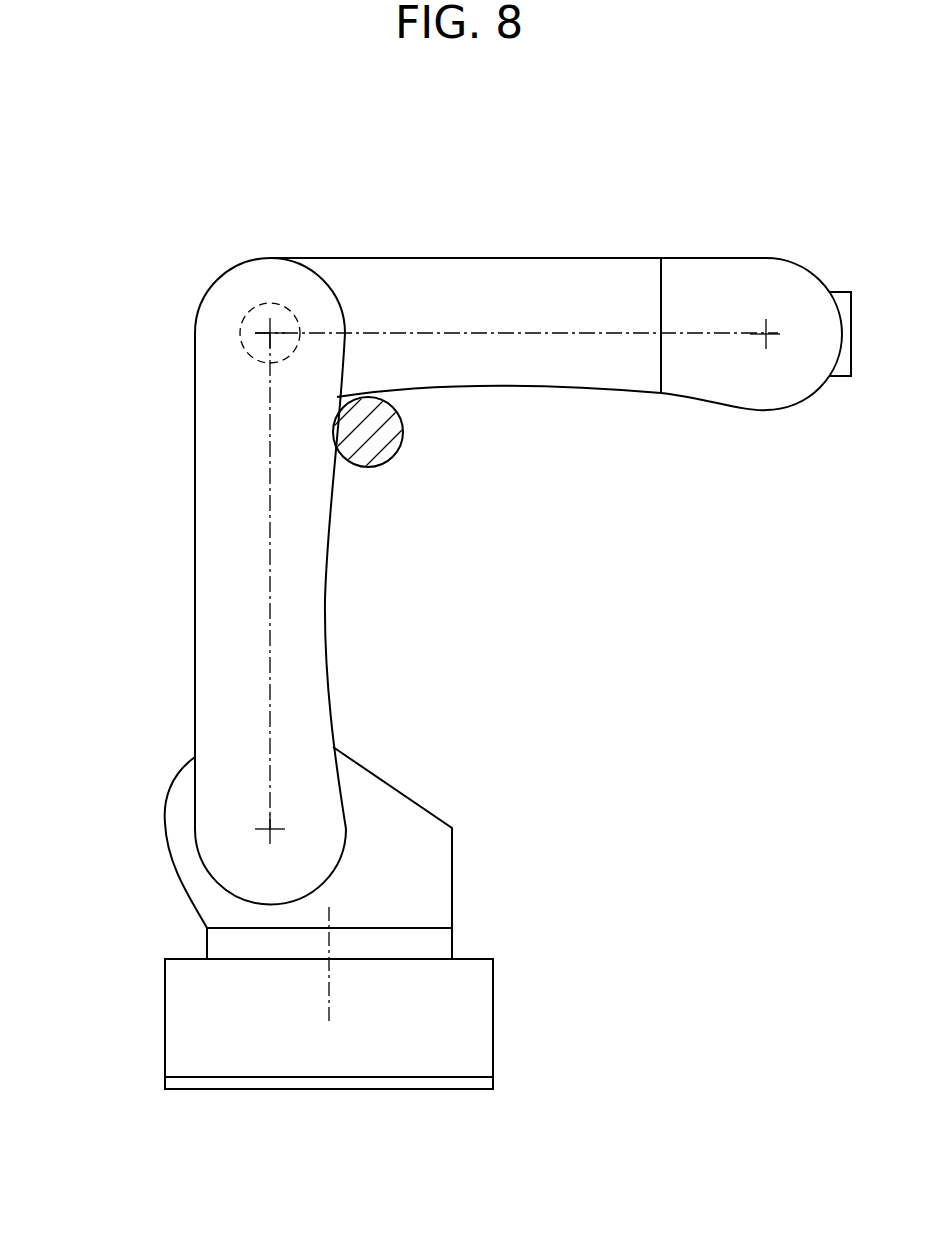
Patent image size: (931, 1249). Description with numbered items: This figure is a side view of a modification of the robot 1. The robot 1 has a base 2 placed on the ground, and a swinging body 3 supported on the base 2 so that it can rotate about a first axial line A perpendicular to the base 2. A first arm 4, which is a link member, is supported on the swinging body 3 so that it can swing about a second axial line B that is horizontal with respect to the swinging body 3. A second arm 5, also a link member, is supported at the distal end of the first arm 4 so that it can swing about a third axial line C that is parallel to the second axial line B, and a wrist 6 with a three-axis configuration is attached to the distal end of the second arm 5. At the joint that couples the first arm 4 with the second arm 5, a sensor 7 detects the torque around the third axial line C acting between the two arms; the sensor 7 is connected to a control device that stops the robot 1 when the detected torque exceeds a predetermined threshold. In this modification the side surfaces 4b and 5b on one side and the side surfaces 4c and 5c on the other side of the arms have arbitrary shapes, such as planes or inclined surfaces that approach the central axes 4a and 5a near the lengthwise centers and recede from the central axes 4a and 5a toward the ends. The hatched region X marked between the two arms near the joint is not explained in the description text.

The robot 1 is at (76, 204).
The base 2 is at (493, 1017).
The swinging body 3 is at (453, 888).
The first arm 4 is at (256, 581).
The central axis of first arm 4a is at (271, 540).
The side surface of first arm on one side 4b is at (195, 553).
The side surface of first arm on the other side 4c is at (326, 652).
The second arm 5 is at (553, 311).
The central axis of second arm 5a is at (607, 335).
The side surface of second arm on one side 5b is at (512, 258).
The side surface of second arm on the other side 5c is at (530, 391).
The wrist 6 is at (757, 240).
The sensor 7 is at (268, 303).
The first axial line A is at (331, 992).
The second axial line B is at (270, 829).
The third axial line C is at (270, 333).
The region X is at (395, 457).